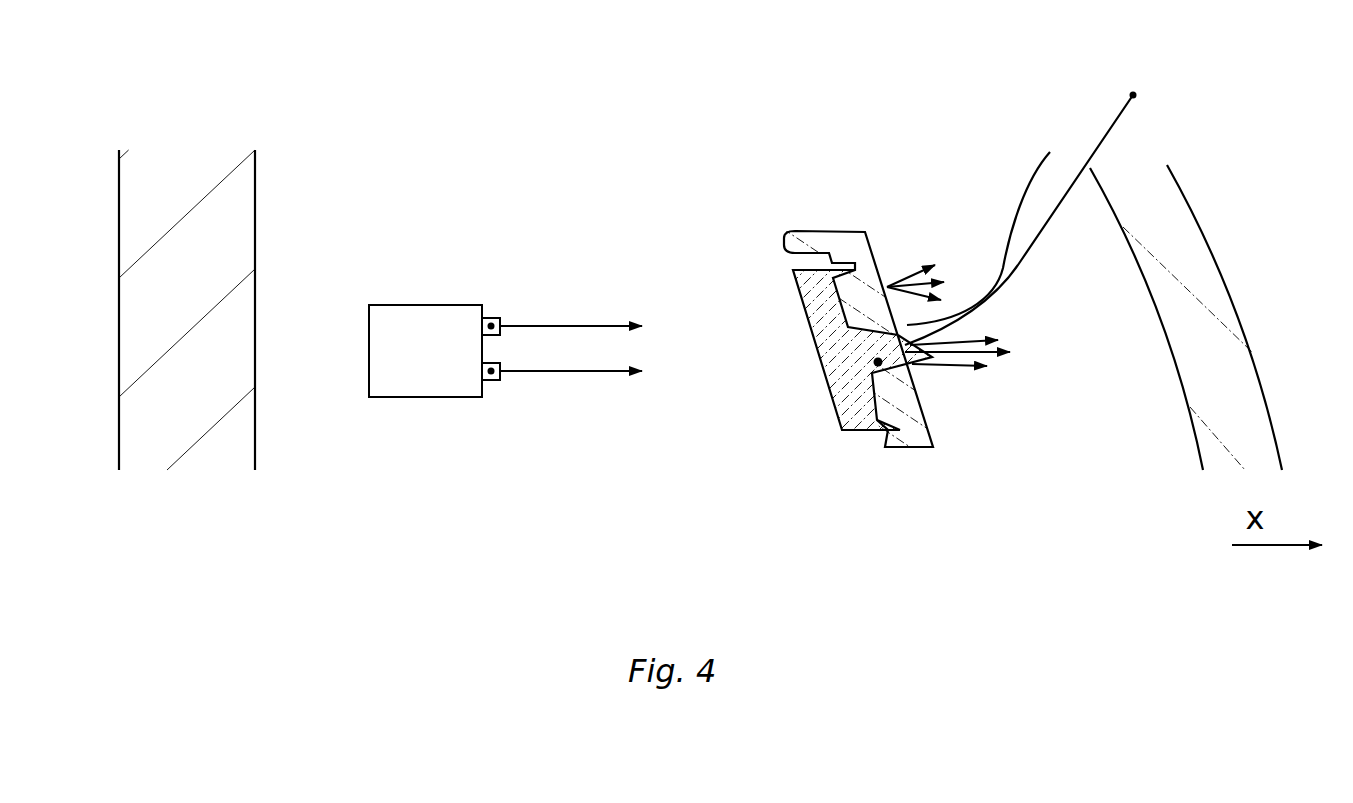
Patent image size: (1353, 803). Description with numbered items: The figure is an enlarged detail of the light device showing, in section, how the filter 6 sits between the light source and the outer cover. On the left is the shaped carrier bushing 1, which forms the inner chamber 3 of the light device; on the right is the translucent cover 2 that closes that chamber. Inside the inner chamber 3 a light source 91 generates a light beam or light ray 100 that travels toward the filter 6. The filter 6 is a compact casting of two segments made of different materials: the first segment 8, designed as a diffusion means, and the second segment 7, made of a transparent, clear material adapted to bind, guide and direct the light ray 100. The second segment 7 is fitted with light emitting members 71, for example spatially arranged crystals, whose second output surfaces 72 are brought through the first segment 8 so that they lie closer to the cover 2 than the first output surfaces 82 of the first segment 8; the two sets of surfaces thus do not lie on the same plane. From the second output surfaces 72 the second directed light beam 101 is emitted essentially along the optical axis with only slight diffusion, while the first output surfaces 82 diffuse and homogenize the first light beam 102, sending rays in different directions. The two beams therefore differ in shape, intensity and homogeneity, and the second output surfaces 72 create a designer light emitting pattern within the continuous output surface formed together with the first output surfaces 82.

The carrier bushing 1 is at (118, 365).
The translucent cover 2 is at (1253, 360).
The inner chamber 3 is at (350, 170).
The filter 6 is at (813, 215).
The second segment 7 is at (866, 432).
The first segment 8 is at (912, 448).
The light emitting members 71 is at (878, 362).
The second output surfaces 72 is at (1040, 205).
The first output surfaces 82 is at (1000, 215).
The light source 91 is at (489, 318).
The light ray 100 is at (561, 321).
The second light beam 101 is at (960, 370).
The first light beam 102 is at (903, 272).